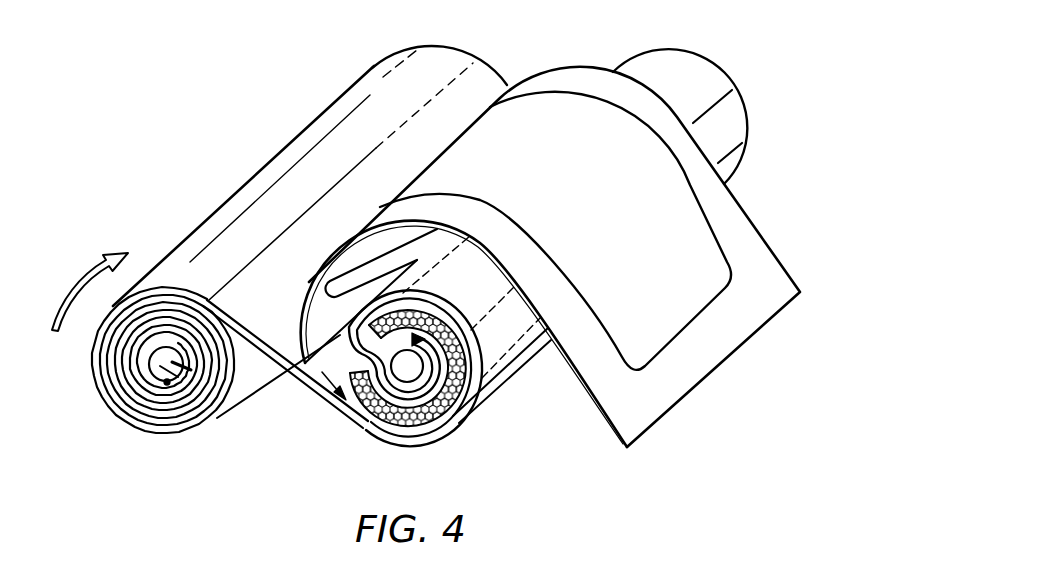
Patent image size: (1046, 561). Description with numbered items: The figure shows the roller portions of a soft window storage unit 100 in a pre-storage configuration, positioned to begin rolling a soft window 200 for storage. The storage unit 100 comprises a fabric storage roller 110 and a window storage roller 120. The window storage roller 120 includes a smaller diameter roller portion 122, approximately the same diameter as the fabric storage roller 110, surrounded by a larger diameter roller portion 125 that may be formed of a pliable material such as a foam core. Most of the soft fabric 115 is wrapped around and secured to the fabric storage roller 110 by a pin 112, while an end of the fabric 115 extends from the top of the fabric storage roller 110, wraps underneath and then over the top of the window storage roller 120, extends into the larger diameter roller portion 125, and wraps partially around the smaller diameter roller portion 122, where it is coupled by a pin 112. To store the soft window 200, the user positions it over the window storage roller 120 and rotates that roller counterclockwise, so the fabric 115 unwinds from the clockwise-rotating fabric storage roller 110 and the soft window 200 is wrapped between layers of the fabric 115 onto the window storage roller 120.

The storage unit 100 is at (624, 33).
The fabric storage roller 110 is at (150, 383).
The pin 112 is at (168, 383).
The soft fabric 115 is at (112, 350).
The window storage roller 120 is at (480, 390).
The smaller diameter roller portion 122 is at (416, 376).
The larger diameter roller portion 125 is at (387, 428).
The soft window 200 is at (660, 401).